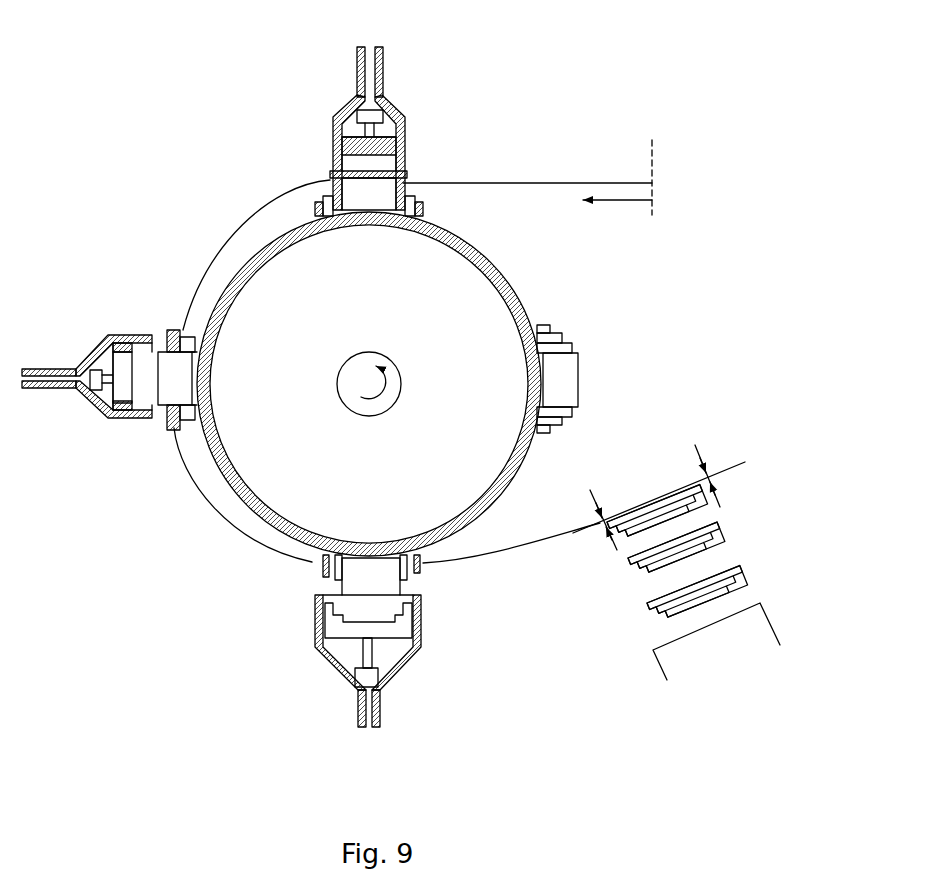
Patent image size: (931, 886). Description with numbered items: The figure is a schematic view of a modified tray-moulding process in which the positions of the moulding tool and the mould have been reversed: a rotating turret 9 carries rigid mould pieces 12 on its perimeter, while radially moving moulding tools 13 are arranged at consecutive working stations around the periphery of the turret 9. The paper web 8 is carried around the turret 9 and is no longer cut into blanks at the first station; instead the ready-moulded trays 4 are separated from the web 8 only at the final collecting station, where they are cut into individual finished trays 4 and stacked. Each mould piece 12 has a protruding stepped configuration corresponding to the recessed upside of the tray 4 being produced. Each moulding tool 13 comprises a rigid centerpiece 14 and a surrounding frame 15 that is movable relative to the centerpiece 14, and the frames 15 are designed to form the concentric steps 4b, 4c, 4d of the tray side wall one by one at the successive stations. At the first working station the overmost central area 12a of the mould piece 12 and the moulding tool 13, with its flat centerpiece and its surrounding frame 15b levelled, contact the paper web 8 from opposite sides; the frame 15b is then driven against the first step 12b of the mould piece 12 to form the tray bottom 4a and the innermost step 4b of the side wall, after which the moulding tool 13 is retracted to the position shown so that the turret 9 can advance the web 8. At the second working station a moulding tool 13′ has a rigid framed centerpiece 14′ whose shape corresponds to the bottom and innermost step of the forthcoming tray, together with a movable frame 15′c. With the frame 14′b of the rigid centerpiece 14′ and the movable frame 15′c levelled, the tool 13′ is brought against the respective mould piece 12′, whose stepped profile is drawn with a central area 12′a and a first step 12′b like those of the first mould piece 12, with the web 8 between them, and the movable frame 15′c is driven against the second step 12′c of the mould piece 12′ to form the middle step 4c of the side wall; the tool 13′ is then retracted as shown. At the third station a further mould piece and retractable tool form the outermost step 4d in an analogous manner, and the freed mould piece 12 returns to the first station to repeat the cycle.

The tray 4 is at (625, 533).
The tray bottom 4a is at (720, 603).
The innermost step of the tray side wall 4b is at (730, 595).
The middle step of the tray side wall 4c is at (737, 583).
The outermost step of the tray side wall 4d is at (733, 573).
The paper web 8 is at (540, 183).
The turret 9 is at (523, 279).
The mould piece 12 is at (433, 212).
The overmost central area of the mould piece 12a is at (327, 172).
The first step of the mould piece 12b is at (335, 175).
The moulding tool 13 is at (352, 67).
The centerpiece 14 is at (390, 122).
The frame 15 is at (403, 143).
The surrounding frame 15b is at (398, 172).
The mould piece 12′ is at (195, 316).
The holding block side element 12′a is at (168, 427).
The holding block side element 12′b is at (172, 430).
The second step of the mould piece 12′c is at (178, 428).
The moulding tool 13′ is at (80, 352).
The rigid framed centerpiece 14′ is at (125, 338).
The frame of the rigid centerpiece 14′b is at (163, 342).
The movable frame 15′c is at (160, 420).